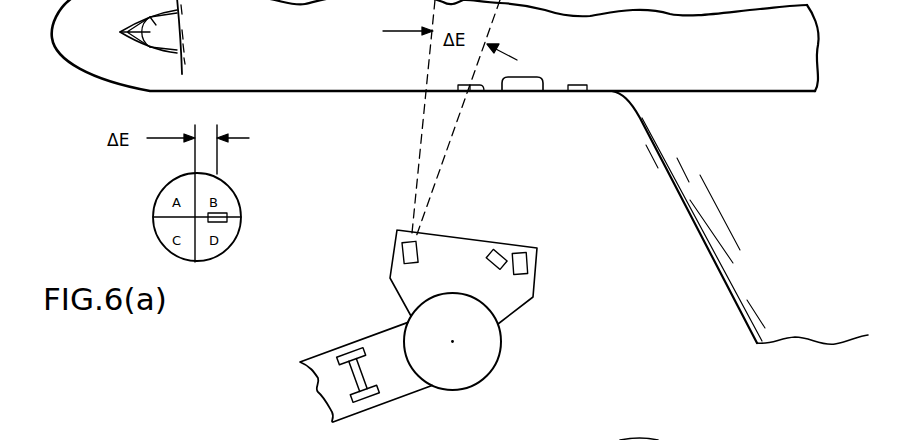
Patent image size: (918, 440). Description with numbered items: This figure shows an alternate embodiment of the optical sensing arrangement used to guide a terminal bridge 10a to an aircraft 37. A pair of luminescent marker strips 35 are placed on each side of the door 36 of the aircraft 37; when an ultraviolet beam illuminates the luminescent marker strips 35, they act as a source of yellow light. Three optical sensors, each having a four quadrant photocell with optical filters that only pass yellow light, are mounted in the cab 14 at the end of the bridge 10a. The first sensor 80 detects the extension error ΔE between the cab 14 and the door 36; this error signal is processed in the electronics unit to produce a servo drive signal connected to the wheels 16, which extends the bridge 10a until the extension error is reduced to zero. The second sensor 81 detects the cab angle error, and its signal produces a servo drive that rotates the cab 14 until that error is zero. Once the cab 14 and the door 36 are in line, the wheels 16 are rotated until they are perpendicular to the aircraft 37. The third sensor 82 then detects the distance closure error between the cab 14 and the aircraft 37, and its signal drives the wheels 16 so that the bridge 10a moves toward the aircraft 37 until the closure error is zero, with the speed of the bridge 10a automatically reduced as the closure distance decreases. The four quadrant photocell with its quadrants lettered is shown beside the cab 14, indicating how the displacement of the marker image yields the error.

The aircraft 37 is at (313, 92).
The luminescent marker strips 35 is at (487, 92).
The door 36 is at (539, 92).
The first sensor 80 is at (403, 250).
The second sensor 81 is at (528, 265).
The third sensor 82 is at (505, 247).
The cab 14 is at (502, 330).
The bridge 10a is at (378, 337).
The wheels 16 is at (380, 393).